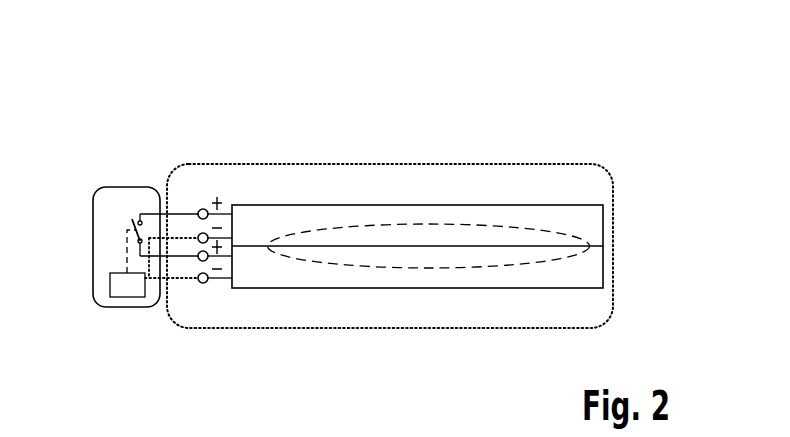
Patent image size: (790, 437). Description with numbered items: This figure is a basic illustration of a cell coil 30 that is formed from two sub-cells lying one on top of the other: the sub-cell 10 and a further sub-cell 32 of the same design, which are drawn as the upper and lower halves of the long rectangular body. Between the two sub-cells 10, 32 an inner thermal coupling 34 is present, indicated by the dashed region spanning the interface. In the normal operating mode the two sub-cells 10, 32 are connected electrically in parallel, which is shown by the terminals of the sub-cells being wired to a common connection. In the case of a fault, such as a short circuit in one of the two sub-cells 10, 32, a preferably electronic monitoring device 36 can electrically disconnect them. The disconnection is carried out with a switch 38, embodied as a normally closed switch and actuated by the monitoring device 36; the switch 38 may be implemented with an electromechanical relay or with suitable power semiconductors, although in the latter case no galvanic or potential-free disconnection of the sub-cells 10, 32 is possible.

The cell coil 30 is at (393, 90).
The sub-cell 10 is at (603, 222).
The further sub-cell 32 is at (603, 262).
The inner thermal coupling 34 is at (487, 223).
The monitoring device 36 is at (127, 189).
The switch 38 is at (134, 227).